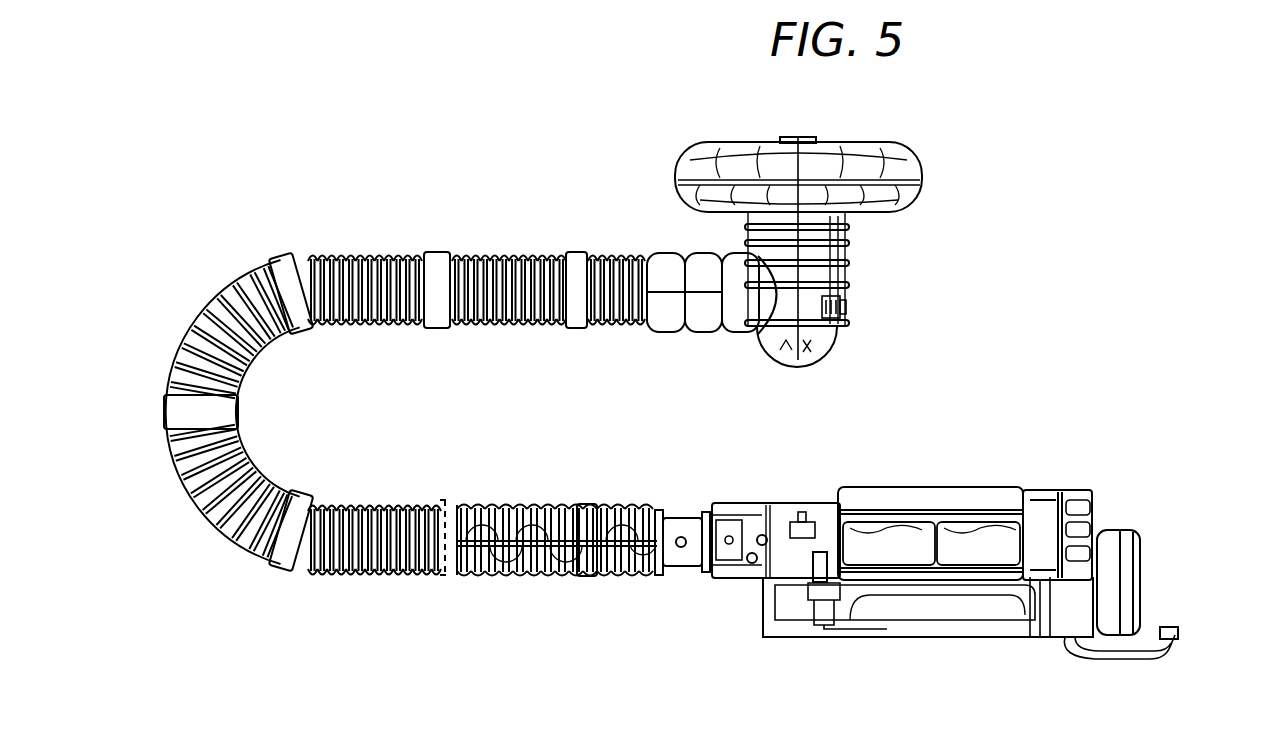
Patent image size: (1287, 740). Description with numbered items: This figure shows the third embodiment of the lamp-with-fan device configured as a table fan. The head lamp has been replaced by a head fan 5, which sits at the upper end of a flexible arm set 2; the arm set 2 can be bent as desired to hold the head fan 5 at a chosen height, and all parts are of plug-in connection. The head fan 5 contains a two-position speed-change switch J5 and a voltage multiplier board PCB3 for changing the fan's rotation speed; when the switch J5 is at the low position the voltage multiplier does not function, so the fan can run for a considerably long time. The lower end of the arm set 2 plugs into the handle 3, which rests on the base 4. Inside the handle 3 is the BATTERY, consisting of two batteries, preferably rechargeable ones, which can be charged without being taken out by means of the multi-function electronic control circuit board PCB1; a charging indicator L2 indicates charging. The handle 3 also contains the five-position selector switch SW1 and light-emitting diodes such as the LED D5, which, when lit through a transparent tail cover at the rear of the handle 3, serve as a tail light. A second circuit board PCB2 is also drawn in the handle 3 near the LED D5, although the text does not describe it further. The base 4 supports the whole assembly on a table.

The flexible arm set 2 is at (384, 262).
The head fan 5 is at (928, 163).
The two-position speed-change switch J5 is at (846, 306).
The voltage multiplier board PCB3 is at (822, 352).
The multi-function electronic control circuit board PCB1 is at (758, 505).
The five-position selector switch SW1 is at (805, 500).
The charging indicator L2 is at (748, 502).
The batteries BATTERY is at (876, 545).
The handle 3 is at (992, 490).
The printed circuit board PCB2 is at (1068, 500).
The LED D5 is at (1093, 522).
The base 4 is at (1142, 600).